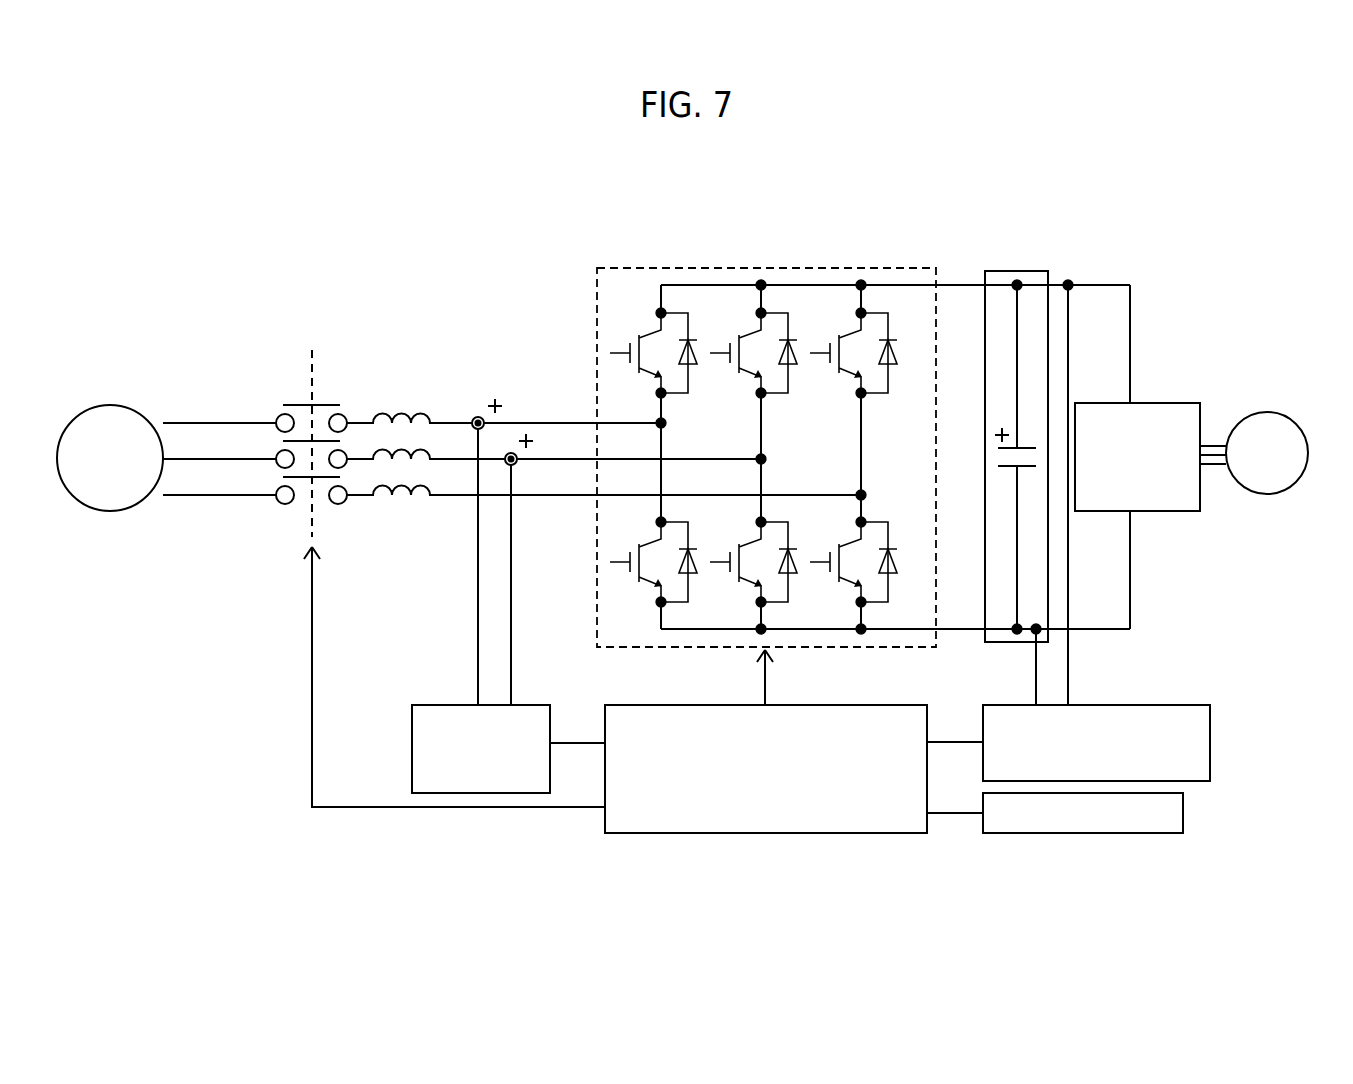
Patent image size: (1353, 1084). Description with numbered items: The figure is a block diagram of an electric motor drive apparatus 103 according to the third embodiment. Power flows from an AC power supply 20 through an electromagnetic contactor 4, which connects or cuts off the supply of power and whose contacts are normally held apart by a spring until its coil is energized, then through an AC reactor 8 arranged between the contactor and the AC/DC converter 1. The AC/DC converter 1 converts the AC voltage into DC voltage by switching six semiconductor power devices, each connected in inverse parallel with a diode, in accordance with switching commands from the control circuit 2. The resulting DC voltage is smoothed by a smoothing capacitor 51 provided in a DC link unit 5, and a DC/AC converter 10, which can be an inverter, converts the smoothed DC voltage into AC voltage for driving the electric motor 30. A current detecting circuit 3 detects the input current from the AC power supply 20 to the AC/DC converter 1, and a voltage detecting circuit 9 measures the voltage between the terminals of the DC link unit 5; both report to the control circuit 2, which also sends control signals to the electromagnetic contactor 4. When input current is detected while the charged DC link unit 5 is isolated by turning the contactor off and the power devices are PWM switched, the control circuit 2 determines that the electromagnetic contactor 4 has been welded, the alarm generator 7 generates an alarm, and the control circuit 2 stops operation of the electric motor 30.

The electric motor drive apparatus 103 is at (838, 207).
The AC/DC converter 1 is at (892, 265).
The control circuit 2 is at (757, 838).
The current detecting circuit 3 is at (412, 743).
The electromagnetic contactor 4 is at (302, 517).
The DC link unit 5 is at (1015, 433).
The smoothing capacitor 51 is at (1002, 477).
The alarm generator 7 is at (1103, 833).
The AC reactor 8 is at (417, 500).
The voltage detecting circuit 9 is at (1103, 705).
The DC/AC converter 10 is at (1142, 403).
The AC power supply 20 is at (123, 510).
The electric motor 30 is at (1264, 412).